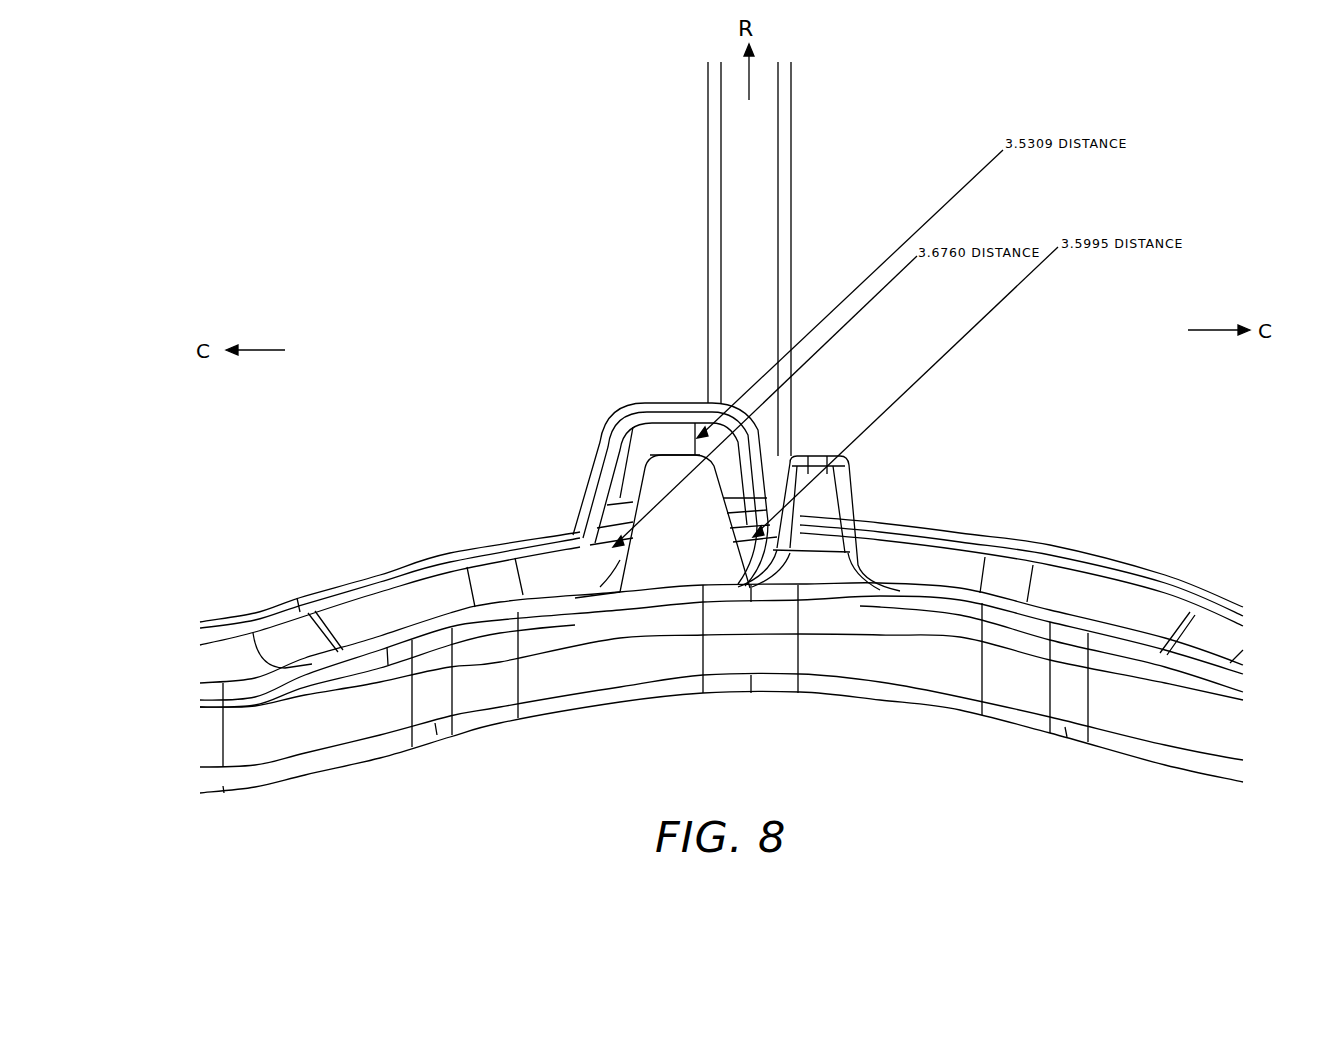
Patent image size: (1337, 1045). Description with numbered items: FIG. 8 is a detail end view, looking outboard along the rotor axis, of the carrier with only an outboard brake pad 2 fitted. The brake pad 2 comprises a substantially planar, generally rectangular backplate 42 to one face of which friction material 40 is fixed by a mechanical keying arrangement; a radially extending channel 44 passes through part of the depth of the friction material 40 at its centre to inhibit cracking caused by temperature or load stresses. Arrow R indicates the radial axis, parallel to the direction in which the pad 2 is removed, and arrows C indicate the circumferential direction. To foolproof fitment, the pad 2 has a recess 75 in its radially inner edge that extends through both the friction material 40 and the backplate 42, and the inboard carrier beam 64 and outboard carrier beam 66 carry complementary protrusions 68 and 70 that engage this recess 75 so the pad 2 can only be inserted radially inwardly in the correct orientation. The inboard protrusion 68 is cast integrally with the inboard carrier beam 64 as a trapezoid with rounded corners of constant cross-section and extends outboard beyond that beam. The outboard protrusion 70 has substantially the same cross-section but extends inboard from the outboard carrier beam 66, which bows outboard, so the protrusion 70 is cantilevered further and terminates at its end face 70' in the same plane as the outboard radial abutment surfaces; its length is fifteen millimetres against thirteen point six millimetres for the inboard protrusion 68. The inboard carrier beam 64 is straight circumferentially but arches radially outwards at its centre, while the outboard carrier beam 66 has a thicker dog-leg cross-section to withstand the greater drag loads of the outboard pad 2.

The brake pad 2 is at (617, 88).
The friction material 40 is at (563, 300).
The backplate 42 is at (1237, 618).
The radially extending channel 44 is at (765, 137).
The inboard carrier beam 64 is at (1178, 733).
The outboard carrier beam 66 is at (207, 670).
The inboard protrusion 68 is at (855, 505).
The outboard protrusion 70 is at (622, 523).
The first hook rib 70' is at (605, 453).
The recess 75 is at (652, 437).